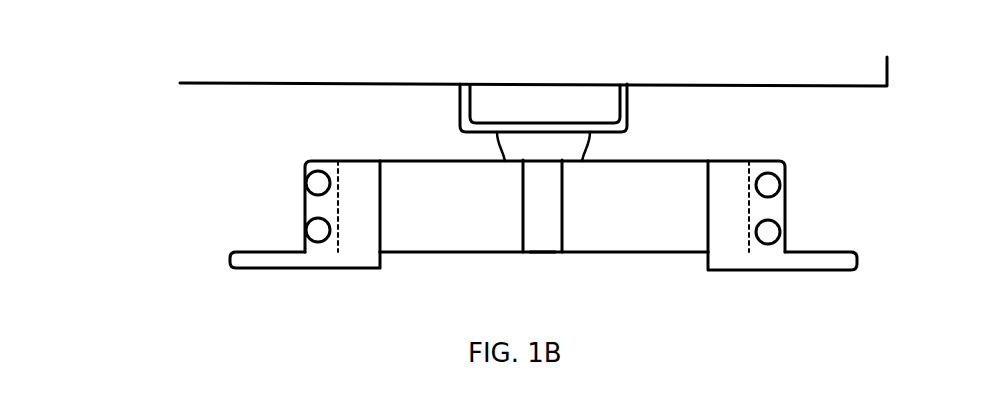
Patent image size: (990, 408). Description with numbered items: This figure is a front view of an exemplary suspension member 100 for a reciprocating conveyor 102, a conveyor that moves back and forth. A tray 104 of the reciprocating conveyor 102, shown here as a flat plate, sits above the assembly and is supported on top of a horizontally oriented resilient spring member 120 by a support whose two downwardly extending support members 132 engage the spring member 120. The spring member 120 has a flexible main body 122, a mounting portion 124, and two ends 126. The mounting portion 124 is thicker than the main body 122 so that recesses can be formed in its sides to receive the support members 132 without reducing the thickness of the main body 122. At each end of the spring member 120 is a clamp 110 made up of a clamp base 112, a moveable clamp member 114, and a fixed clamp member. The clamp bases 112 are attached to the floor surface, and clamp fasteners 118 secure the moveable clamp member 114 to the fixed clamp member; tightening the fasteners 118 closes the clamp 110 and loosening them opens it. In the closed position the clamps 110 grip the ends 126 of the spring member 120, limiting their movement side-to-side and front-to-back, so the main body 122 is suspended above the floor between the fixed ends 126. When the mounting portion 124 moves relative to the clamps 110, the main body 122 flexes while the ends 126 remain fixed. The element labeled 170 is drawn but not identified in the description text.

The suspension member 100 is at (568, 208).
The reciprocating conveyor 102 is at (814, 49).
The tray 104 is at (577, 83).
The stem 170 is at (622, 125).
The clamp 110 is at (548, 194).
The clamp base 112 is at (280, 258).
The moveable clamp member 114 is at (358, 178).
The clamp fasteners 118 is at (306, 230).
The horizontally oriented resilient spring member 120 is at (444, 149).
The flexible main body 122 is at (422, 243).
The mounting portion 124 is at (508, 240).
The ends 126 is at (387, 208).
The support members 132 is at (550, 208).